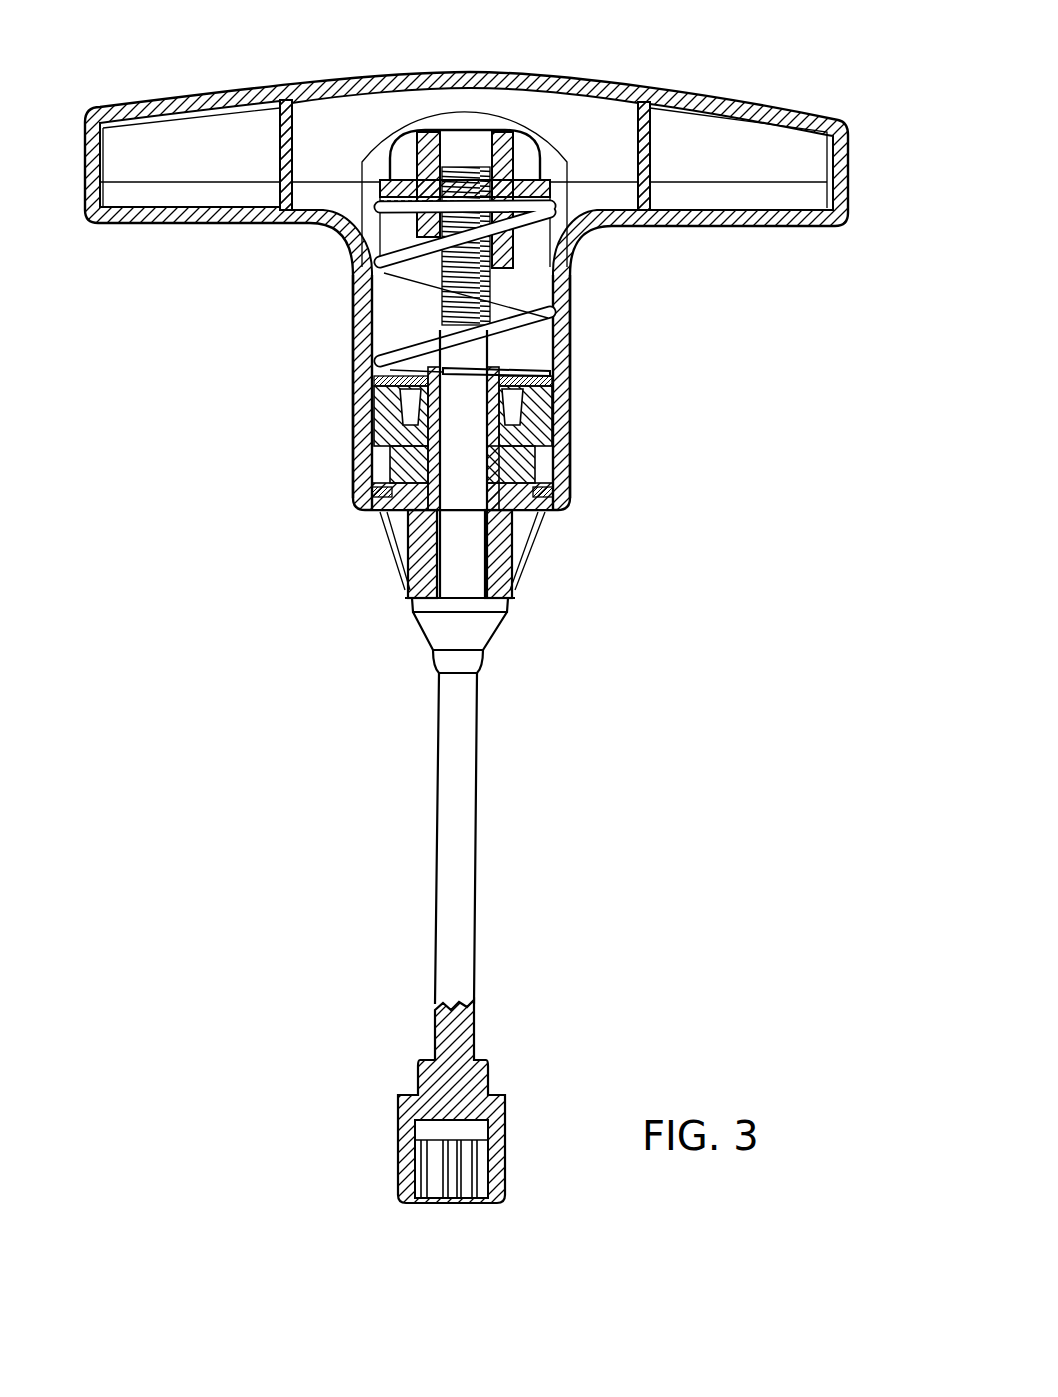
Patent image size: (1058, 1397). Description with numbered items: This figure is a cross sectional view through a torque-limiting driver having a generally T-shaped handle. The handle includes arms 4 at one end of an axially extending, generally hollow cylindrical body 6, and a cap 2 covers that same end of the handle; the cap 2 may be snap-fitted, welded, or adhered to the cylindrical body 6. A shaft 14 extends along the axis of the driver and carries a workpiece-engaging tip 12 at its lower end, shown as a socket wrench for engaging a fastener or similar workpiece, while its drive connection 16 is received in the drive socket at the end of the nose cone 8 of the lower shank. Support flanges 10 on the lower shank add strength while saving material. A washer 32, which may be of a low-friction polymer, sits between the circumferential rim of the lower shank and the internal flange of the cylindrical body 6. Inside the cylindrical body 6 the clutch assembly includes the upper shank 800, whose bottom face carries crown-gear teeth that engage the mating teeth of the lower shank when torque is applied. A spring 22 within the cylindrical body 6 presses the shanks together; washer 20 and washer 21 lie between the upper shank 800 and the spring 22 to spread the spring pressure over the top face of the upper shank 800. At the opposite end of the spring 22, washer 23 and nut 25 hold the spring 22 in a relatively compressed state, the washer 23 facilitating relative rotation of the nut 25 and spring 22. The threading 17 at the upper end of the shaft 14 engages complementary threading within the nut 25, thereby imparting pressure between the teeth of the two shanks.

The cap 2 is at (760, 103).
The arms 4 is at (768, 226).
The cylindrical body 6 is at (565, 350).
The nose cone 8 is at (522, 594).
The support flanges 10 is at (530, 548).
The workpiece-engaging tip 12 is at (457, 1210).
The shaft 14 is at (480, 842).
The drive connection 16 is at (462, 546).
The threading 17 is at (385, 303).
The washer 20 is at (565, 390).
The washer 21 is at (565, 375).
The spring 22 is at (540, 318).
The washer 23 is at (553, 203).
The nut 25 is at (541, 128).
The washer 32 is at (552, 491).
The upper shank 800 is at (565, 412).